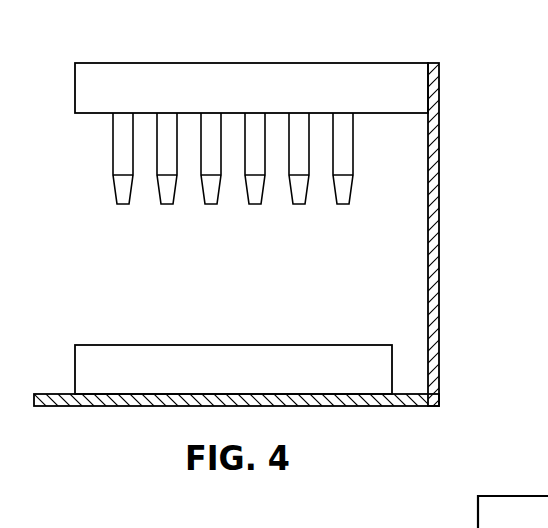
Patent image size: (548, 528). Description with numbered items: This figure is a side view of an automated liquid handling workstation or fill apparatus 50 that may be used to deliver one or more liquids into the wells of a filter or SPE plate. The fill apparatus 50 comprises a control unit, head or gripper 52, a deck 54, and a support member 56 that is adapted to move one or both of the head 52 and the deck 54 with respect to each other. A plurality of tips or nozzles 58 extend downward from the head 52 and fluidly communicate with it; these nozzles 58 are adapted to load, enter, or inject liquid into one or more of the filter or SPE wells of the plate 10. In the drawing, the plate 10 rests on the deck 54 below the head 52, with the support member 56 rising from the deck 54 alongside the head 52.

The fill apparatus 50 is at (251, 41).
The head 52 is at (263, 103).
The tips or nozzles 58 is at (113, 150).
The support member 56 is at (440, 222).
The deck 54 is at (337, 407).
The plate 10 is at (245, 382).